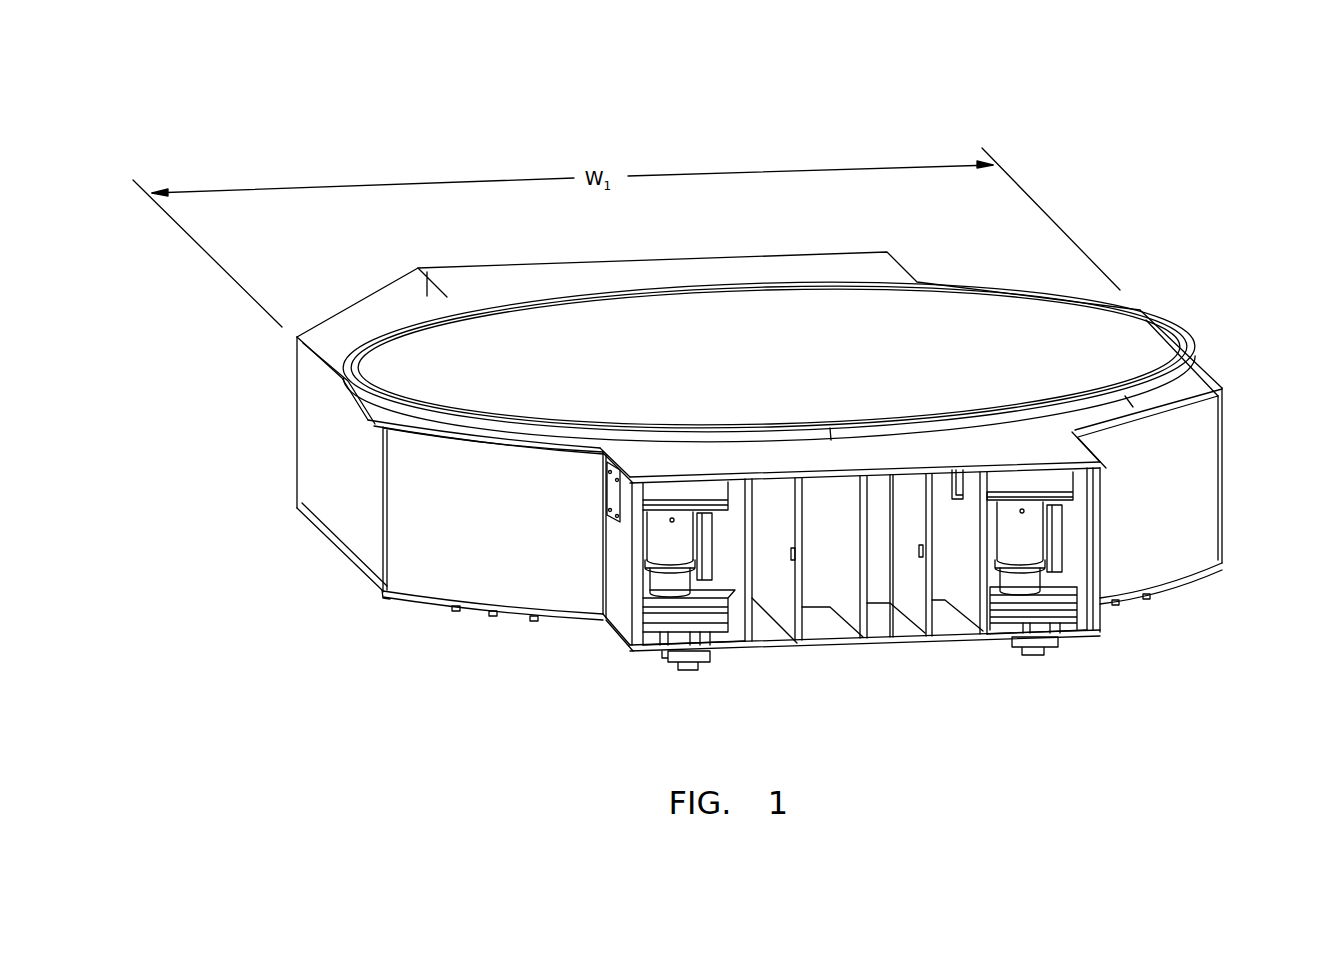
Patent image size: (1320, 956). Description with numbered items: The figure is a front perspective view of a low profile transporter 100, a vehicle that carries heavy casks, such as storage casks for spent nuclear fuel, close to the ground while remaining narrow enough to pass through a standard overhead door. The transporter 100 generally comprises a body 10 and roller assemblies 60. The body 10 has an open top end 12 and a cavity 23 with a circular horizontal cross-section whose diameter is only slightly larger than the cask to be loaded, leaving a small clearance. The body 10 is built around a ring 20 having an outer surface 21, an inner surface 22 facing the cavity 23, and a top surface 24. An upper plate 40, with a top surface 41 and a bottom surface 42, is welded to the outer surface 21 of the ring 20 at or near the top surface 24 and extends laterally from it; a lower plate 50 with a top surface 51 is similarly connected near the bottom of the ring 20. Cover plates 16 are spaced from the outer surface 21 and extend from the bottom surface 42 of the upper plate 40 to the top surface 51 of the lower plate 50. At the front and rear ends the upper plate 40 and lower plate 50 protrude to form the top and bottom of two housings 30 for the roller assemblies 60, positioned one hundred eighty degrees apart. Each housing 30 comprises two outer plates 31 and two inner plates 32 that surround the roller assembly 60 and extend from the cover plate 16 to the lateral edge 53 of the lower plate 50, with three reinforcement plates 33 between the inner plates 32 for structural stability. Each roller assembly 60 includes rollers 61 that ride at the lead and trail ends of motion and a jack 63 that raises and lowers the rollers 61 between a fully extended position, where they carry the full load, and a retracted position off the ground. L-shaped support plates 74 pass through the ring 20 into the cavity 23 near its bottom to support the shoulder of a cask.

The low profile transporter 100 is at (1170, 182).
The body 10 is at (1193, 346).
The open top end 12 is at (1020, 340).
The cover plates 16 is at (1190, 462).
The ring 20 is at (1178, 428).
The outer surface 21 is at (1185, 381).
The inner surface 22 is at (366, 366).
The cavity 23 is at (722, 357).
The top surface 24 is at (1152, 342).
The housings 30 is at (1109, 496).
The outer plates 31 is at (636, 620).
The inner plates 32 is at (779, 612).
The reinforcement plates 33 is at (911, 595).
The upper plate 40 is at (388, 407).
The top surface 41 is at (420, 420).
The bottom surface 42 is at (355, 428).
The lower plate 50 is at (383, 598).
The top surface 51 is at (345, 562).
The lateral edge 53 is at (810, 644).
The roller assemblies 60 is at (632, 579).
The rollers 61 is at (688, 663).
The jack 63 is at (741, 620).
The support plates 74 is at (534, 623).